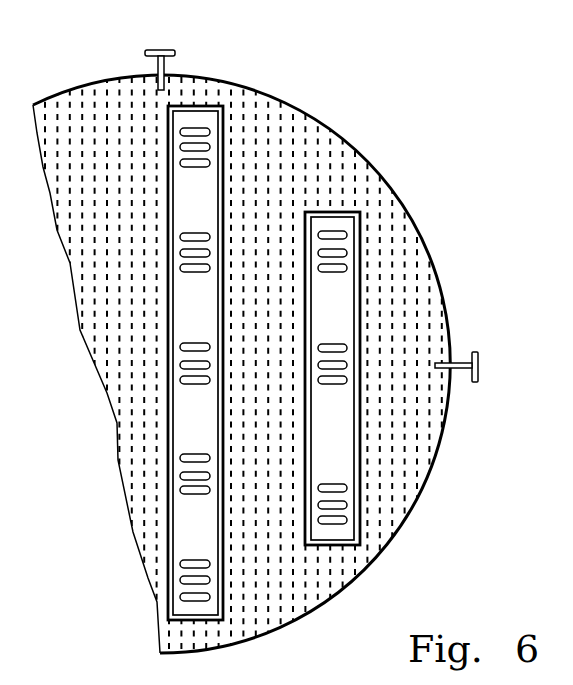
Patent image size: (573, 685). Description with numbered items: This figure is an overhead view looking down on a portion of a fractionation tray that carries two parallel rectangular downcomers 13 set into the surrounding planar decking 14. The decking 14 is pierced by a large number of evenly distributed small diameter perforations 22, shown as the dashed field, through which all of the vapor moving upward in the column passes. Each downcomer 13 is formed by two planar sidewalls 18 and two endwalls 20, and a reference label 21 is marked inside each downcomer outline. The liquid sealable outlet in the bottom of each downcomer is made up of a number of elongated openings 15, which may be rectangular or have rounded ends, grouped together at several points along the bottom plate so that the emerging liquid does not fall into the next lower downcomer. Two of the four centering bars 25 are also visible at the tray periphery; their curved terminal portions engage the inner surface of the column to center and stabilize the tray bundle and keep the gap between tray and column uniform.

The rectangular downcomer 13 is at (360, 287).
The planar decking 14 is at (283, 410).
The openings 15 is at (343, 228).
The planar sidewalls 18 is at (223, 144).
The endwalls 20 is at (202, 106).
The inner liner 21 is at (213, 425).
The perforations 22 is at (317, 157).
The centering bars 25 is at (162, 49).